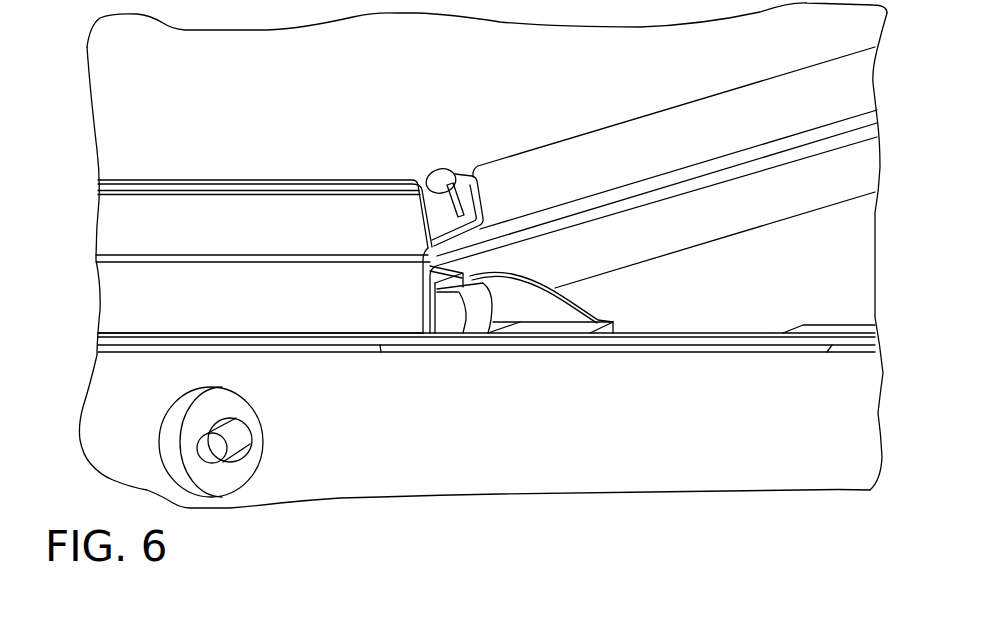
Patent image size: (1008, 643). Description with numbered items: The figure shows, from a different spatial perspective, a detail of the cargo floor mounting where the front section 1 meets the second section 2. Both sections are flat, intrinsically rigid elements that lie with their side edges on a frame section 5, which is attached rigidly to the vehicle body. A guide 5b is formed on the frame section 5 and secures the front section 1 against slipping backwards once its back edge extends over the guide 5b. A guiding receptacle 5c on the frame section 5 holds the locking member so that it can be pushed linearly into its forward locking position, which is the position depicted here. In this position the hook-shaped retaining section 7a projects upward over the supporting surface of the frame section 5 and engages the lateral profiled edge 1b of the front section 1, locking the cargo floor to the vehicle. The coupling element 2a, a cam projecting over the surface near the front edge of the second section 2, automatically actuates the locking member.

The first front section 1 is at (210, 285).
The lateral profiled edge 1b is at (418, 300).
The second section 2 is at (277, 207).
The coupling element 2a is at (443, 180).
The frame section 5 is at (845, 350).
The guide 5b is at (538, 305).
The guiding receptacle 5c is at (768, 308).
The hook-shaped retaining section 7a is at (477, 307).